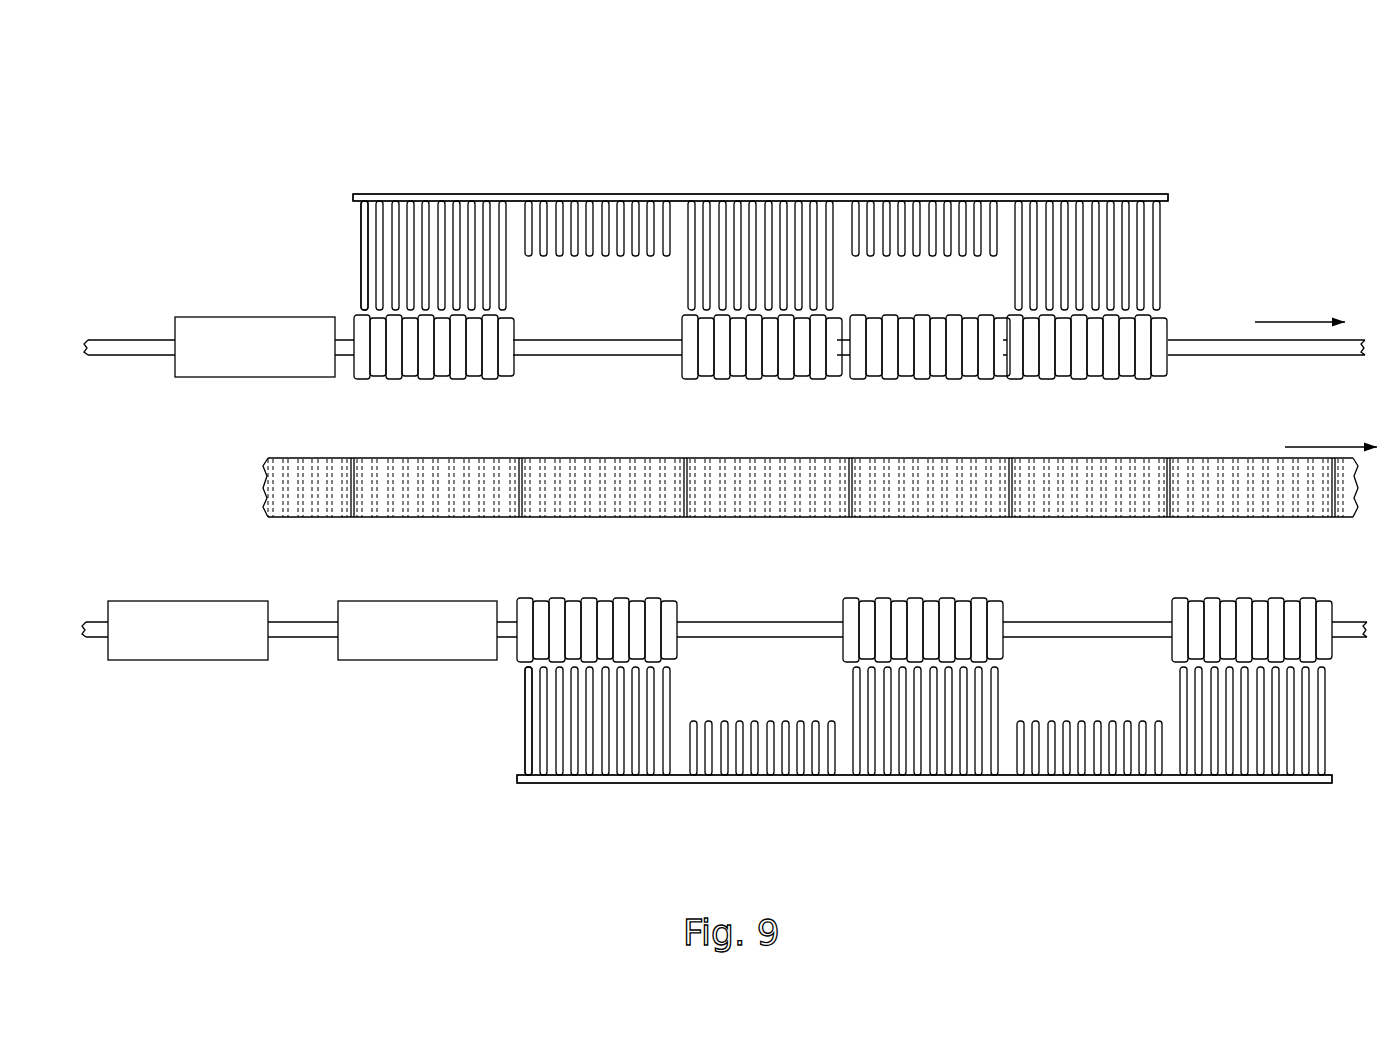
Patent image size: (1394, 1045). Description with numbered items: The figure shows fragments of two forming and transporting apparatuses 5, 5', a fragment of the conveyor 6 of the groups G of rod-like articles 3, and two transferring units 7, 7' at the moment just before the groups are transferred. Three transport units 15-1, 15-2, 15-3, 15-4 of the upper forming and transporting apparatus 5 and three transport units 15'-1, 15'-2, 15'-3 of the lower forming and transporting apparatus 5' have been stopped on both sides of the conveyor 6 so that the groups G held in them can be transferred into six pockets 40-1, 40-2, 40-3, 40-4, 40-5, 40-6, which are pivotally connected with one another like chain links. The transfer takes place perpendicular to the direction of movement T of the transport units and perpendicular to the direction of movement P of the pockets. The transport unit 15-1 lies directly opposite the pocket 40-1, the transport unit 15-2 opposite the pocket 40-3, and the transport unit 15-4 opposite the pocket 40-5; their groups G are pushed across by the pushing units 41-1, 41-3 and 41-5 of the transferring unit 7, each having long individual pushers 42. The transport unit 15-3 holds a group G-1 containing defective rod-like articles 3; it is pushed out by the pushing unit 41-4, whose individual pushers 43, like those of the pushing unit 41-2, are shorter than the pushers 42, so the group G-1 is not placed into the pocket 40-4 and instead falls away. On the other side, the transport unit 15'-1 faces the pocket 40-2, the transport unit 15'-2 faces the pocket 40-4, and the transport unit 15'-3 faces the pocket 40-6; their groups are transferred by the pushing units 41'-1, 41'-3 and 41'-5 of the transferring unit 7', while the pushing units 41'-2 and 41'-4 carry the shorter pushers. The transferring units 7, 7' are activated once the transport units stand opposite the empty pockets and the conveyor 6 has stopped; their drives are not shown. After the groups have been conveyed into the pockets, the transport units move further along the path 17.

The transferring unit 7 is at (759, 113).
The transferring unit 7' is at (834, 820).
The pushing unit 41-1 is at (401, 186).
The pushing unit 41-2 is at (566, 186).
The pushing unit 41-3 is at (721, 186).
The pushing unit 41-4 is at (881, 186).
The pushing unit 41-5 is at (1040, 186).
The pushing unit 41'-1 is at (571, 765).
The pushing unit 41'-2 is at (726, 792).
The pushing unit 41'-3 is at (901, 765).
The pushing unit 41'-4 is at (1056, 792).
The pushing unit 41'-5 is at (1216, 758).
The individual pusher 42 is at (365, 256).
The individual pusher 43 is at (648, 198).
The forming and transporting apparatus 5 is at (230, 299).
The forming and transporting apparatus 5' is at (302, 673).
The rod-like articles 3 is at (412, 384).
The group of rod-like articles G is at (352, 310).
The group containing defective rod-like articles G-1 is at (915, 306).
The path 17 is at (1205, 348).
The direction of movement of the transport units T is at (1290, 320).
The direction of movement of the pockets P is at (1320, 445).
The transport unit 15-1 is at (350, 388).
The transport unit 15-2 is at (673, 388).
The transport unit 15-3 is at (847, 388).
The transport unit 15-4 is at (1170, 382).
The transport unit 15'-1 is at (543, 596).
The transport unit 15'-2 is at (866, 596).
The transport unit 15'-3 is at (1197, 596).
The conveyor of the groups of rod-like articles 6 is at (205, 471).
The pocket 40-1 is at (365, 520).
The pocket 40-2 is at (530, 452).
The pocket 40-3 is at (700, 520).
The pocket 40-4 is at (935, 452).
The pocket 40-5 is at (1026, 520).
The pocket 40-6 is at (1182, 450).